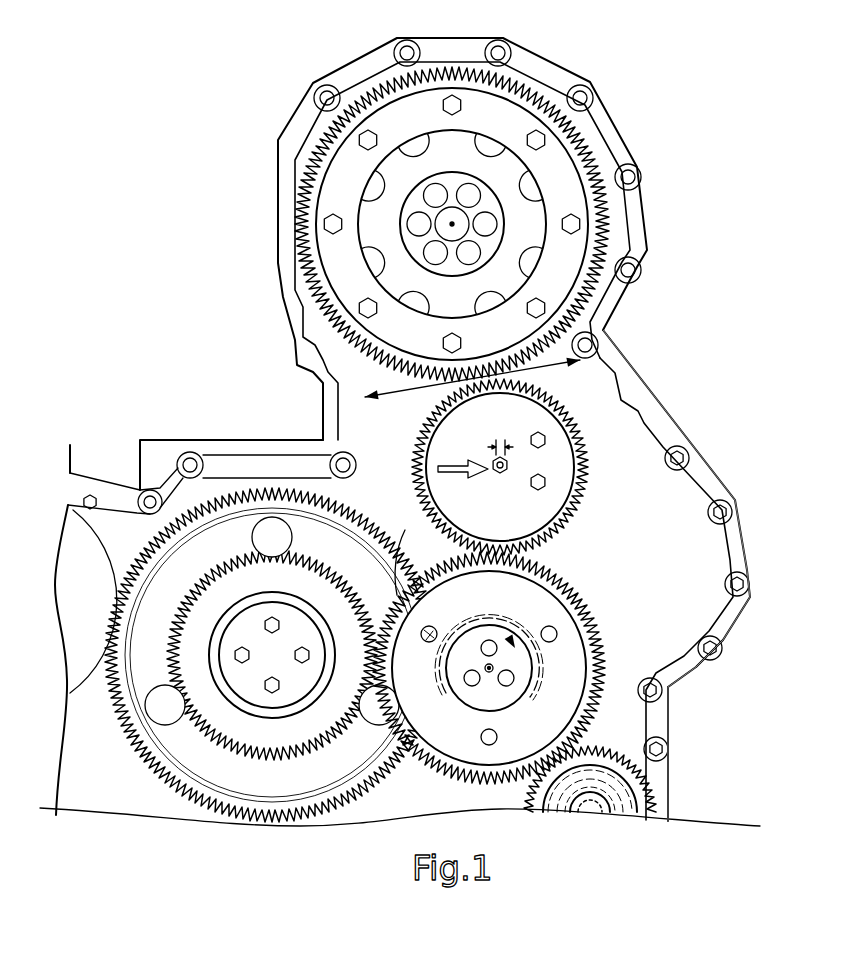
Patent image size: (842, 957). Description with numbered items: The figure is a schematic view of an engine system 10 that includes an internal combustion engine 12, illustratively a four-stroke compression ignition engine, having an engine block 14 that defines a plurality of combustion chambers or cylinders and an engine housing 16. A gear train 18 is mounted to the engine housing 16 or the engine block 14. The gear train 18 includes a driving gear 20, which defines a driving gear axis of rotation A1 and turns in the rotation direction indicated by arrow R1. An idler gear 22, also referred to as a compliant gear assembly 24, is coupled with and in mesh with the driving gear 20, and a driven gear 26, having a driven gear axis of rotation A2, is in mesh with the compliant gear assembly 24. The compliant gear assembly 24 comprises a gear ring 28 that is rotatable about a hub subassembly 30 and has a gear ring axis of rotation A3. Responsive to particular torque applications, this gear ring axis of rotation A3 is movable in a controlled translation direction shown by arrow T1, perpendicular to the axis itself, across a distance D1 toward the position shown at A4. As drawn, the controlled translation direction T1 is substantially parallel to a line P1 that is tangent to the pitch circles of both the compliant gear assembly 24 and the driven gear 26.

The engine system 10 is at (668, 237).
The internal combustion engine 12 is at (636, 306).
The engine block 14 is at (152, 452).
The engine housing 16 is at (690, 500).
The gear train 18 is at (649, 580).
The driving gear 20 is at (567, 693).
The idler gear 22 is at (563, 482).
The compliant gear assembly 24 is at (583, 386).
The driven gear 26 is at (567, 193).
The gear ring 28 is at (585, 432).
The hub subassembly 30 is at (514, 524).
The driving gear axis of rotation A1 is at (489, 670).
The driven gear axis of rotation A2 is at (452, 224).
The gear ring axis of rotation A3 is at (500, 470).
The translated axis position A4 is at (506, 465).
The translation distance D1 is at (500, 443).
The tangent line P1 is at (393, 400).
The rotation direction arrow R1 is at (458, 650).
The controlled translation direction T1 is at (448, 482).